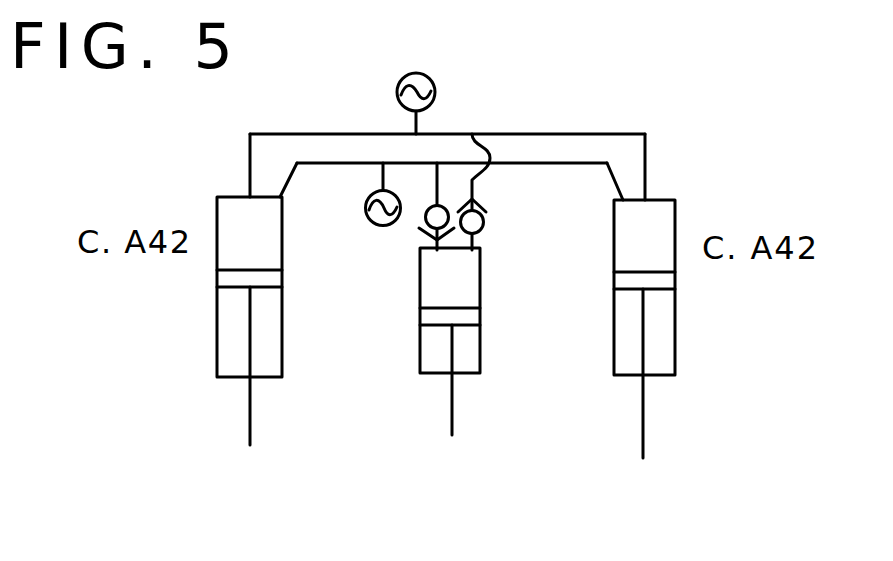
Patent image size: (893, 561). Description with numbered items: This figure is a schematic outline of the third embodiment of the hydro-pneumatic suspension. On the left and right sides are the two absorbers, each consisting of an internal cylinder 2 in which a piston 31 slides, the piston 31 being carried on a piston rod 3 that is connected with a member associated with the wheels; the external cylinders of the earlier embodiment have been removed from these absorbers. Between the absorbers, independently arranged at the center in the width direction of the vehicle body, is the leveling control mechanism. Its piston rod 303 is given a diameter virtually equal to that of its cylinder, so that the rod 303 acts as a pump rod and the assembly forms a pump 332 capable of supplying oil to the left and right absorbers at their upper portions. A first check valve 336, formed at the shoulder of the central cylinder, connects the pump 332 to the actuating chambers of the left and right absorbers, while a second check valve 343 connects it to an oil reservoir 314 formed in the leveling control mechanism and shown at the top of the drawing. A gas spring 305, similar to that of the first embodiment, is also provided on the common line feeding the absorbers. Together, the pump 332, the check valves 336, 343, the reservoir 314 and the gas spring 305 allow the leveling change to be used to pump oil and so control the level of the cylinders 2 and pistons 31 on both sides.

The internal cylinder 2 is at (282, 238).
The piston rod 3 is at (250, 418).
The piston 31 is at (270, 280).
The piston rod 303 is at (465, 365).
The gas spring 305 is at (382, 226).
The oil reservoir 314 is at (435, 92).
The pump 332 is at (453, 287).
The first check valve 336 is at (443, 207).
The second check valve 343 is at (484, 226).